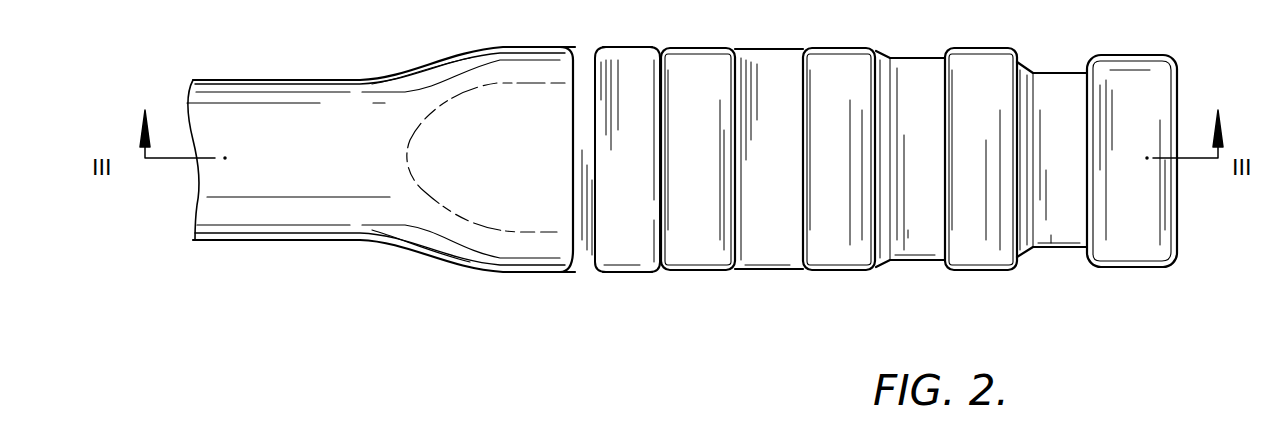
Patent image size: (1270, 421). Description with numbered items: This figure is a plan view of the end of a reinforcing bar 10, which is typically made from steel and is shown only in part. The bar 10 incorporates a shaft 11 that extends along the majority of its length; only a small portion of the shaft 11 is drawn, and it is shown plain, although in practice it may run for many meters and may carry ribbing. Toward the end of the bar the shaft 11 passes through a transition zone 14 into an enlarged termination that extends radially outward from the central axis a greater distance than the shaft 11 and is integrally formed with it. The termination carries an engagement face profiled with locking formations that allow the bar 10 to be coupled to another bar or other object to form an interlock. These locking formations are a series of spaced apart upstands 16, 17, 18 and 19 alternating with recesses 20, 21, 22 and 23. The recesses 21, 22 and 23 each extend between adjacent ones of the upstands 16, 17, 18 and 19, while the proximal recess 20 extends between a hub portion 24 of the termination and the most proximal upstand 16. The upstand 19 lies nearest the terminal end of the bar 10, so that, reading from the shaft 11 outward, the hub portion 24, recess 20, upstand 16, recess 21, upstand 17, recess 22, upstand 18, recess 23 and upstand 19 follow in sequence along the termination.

The reinforcing bar 10 is at (300, 252).
The shaft 11 is at (257, 100).
The transition zone 14 is at (407, 84).
The hub portion 24 is at (533, 82).
The recess 20 is at (627, 78).
The upstand 16 is at (697, 80).
The recess 21 is at (772, 77).
The upstand 17 is at (833, 76).
The recess 22 is at (918, 83).
The upstand 18 is at (977, 78).
The recess 23 is at (1060, 110).
The upstand 19 is at (1118, 110).